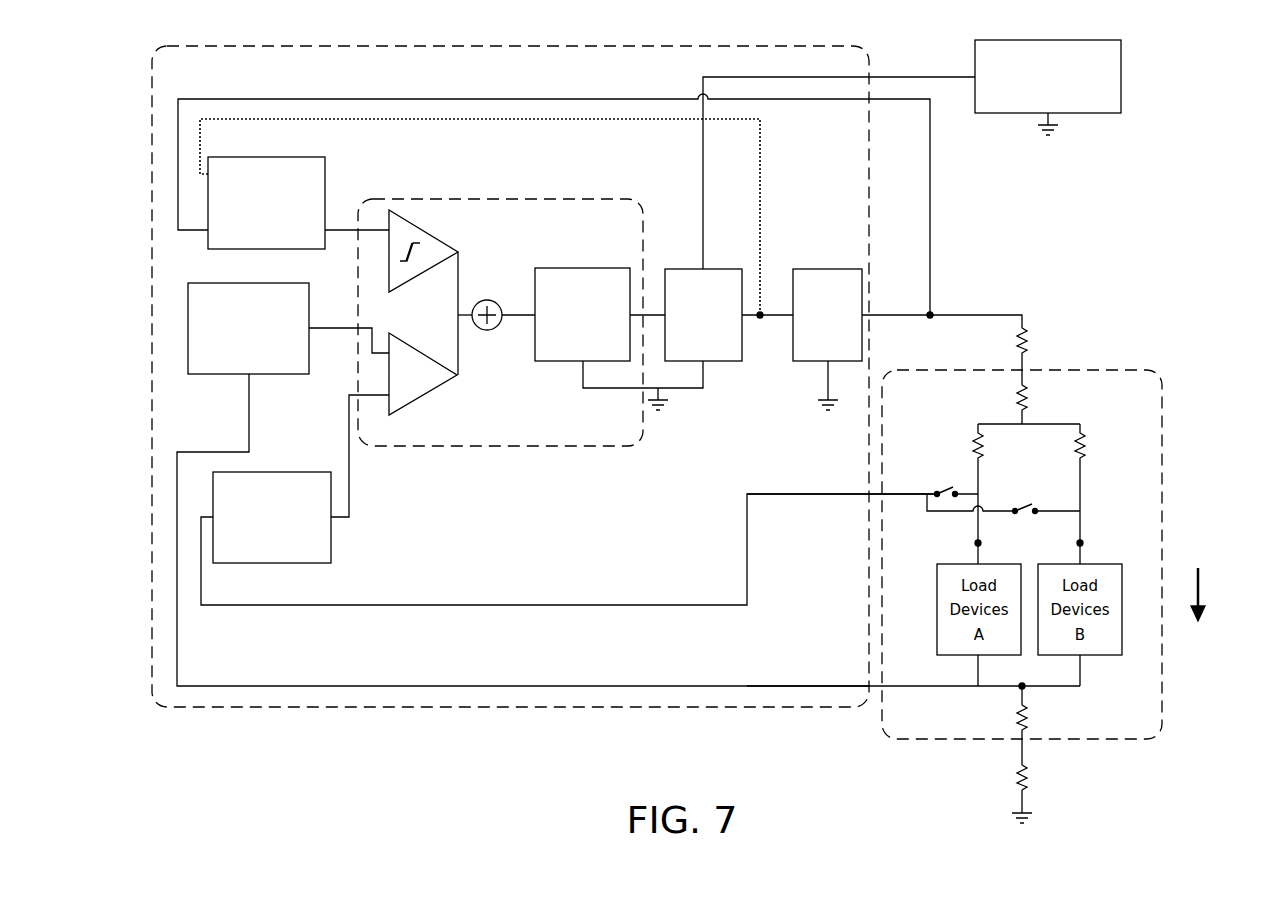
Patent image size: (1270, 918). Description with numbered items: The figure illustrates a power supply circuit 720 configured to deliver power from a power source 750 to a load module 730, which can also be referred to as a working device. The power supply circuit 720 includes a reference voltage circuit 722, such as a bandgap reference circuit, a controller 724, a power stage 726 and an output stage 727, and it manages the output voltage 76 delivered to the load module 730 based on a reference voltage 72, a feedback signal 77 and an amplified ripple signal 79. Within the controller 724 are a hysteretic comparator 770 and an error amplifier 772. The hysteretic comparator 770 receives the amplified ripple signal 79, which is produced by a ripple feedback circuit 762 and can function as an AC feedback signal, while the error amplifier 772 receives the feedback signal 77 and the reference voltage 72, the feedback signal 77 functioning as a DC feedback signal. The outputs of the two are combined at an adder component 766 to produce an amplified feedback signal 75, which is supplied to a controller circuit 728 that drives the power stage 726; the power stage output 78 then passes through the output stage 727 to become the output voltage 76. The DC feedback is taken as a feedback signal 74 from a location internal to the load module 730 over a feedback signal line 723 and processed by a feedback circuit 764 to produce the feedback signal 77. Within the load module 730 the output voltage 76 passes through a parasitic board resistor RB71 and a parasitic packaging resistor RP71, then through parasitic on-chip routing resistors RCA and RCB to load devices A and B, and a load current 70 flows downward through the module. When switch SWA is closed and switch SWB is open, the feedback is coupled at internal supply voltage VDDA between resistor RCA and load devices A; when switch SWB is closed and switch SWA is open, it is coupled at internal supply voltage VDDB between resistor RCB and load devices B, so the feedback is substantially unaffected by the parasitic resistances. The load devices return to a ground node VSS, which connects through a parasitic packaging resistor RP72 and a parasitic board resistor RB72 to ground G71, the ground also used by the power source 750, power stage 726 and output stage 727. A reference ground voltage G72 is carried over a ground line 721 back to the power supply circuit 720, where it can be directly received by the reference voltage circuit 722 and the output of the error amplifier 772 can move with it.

The power supply circuit 720 is at (161, 56).
The controller 724 is at (643, 214).
The ripple feedback circuit 762 is at (266, 203).
The amplified ripple signal 79 is at (343, 230).
The hysteretic comparator 770 is at (425, 230).
The error amplifier 772 is at (423, 397).
The adder component 766 is at (487, 300).
The amplified feedback signal 75 is at (517, 317).
The controller circuit 728 is at (619, 328).
The reference voltage circuit 722 is at (248, 328).
The reference voltage 72 is at (334, 328).
The feedback circuit 764 is at (272, 517).
The feedback signal 77 is at (350, 458).
The feedback signal 74 is at (607, 598).
The feedback signal line 723 is at (781, 496).
The ground line 721 is at (791, 686).
The reference ground voltage G72 is at (593, 680).
The power stage 726 is at (686, 315).
The power stage output 78 is at (761, 313).
The output stage 727 is at (827, 334).
The output voltage 76 is at (930, 315).
The power source 750 is at (1048, 82).
The ground G71 is at (808, 410).
The load module 730 is at (886, 382).
The parasitic board resistor RB71 is at (1047, 356).
The parasitic packaging resistor RP71 is at (1029, 404).
The parasitic on-chip routing resistor RCA is at (997, 494).
The parasitic on-chip routing resistor RCB is at (1101, 494).
The switch SWA is at (967, 487).
The switch SWB is at (1045, 499).
The internal supply voltage VDDA is at (975, 543).
The internal supply voltage VDDB is at (1077, 543).
The ground node VSS is at (1020, 690).
The parasitic packaging resistor RP72 is at (1049, 735).
The parasitic board resistor RB72 is at (1050, 777).
The load current 70 is at (1198, 550).